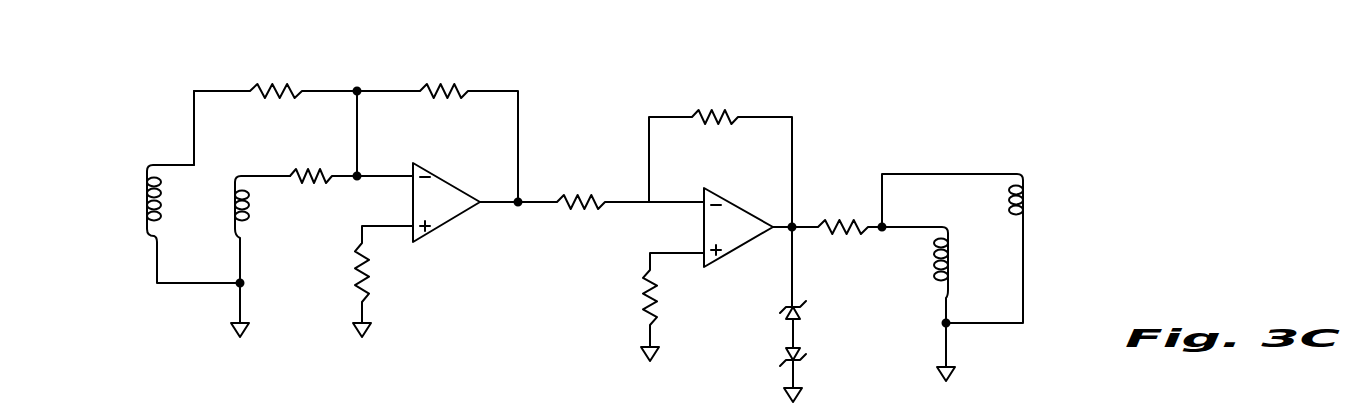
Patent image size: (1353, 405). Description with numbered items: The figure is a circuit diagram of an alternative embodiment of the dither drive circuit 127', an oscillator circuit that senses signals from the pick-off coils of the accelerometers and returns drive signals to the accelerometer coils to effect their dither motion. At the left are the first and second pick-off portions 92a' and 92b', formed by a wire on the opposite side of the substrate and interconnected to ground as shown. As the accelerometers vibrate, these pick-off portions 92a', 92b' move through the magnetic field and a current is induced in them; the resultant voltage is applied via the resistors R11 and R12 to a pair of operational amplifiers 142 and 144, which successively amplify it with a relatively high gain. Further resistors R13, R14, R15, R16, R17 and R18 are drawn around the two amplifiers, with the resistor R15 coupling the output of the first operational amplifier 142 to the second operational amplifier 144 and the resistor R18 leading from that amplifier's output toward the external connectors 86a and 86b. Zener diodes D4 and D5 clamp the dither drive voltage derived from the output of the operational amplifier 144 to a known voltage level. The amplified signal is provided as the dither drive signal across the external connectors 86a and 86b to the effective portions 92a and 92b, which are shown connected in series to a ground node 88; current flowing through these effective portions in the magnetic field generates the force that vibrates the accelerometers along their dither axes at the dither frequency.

The dither drive circuit 127' is at (148, 100).
The first pick-off portion 92a' is at (170, 224).
The second pick-off portion 92b' is at (261, 256).
The resistor R11 is at (275, 78).
The resistor R12 is at (351, 137).
The resistor R13 is at (436, 130).
The resistor R14 is at (360, 281).
The resistor R15 is at (610, 187).
The resistor R16 is at (720, 156).
The resistor R17 is at (653, 307).
The resistor R18 is at (836, 212).
The operational amplifier 142 is at (447, 211).
The operational amplifier 144 is at (735, 237).
The Zener diode D4 is at (779, 287).
The Zener diode D5 is at (779, 371).
The external connector 86a is at (901, 202).
The external connector 86b is at (902, 211).
The effective portion 92a is at (946, 275).
The effective portion 92b is at (983, 248).
The ground connection 88 is at (934, 347).